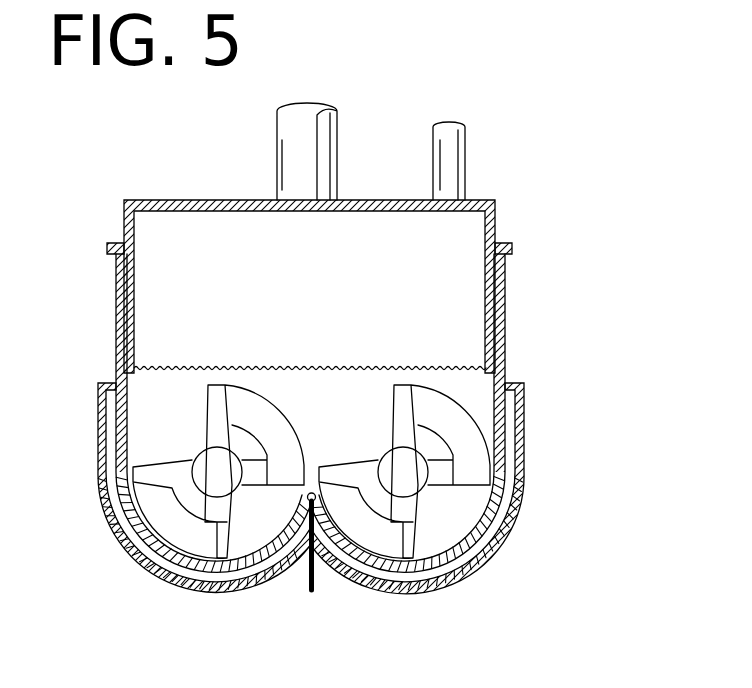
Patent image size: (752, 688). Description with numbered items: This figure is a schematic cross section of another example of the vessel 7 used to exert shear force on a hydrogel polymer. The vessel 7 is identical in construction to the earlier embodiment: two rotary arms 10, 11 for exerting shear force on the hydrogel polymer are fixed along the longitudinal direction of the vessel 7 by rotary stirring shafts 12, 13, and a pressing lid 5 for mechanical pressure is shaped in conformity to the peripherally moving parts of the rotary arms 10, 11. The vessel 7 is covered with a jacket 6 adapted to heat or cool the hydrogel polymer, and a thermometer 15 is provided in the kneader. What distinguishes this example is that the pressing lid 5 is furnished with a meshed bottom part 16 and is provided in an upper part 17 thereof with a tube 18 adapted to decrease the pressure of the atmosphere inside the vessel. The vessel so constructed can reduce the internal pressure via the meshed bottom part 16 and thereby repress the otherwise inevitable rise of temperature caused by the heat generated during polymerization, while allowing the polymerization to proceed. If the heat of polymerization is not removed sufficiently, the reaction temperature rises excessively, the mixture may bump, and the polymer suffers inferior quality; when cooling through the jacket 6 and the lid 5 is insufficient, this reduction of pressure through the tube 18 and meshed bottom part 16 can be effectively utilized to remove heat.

The pressing lid 5 is at (490, 313).
The jacket 6 is at (500, 530).
The vessel 7 is at (510, 448).
The rotary arm 10 is at (400, 548).
The rotary arm 11 is at (193, 537).
The rotary stirring shaft 12 is at (405, 482).
The rotary stirring shaft 13 is at (215, 474).
The thermometer 15 is at (300, 500).
The meshed bottom part 16 is at (160, 372).
The upper part 17 is at (376, 200).
The tube 18 is at (452, 172).